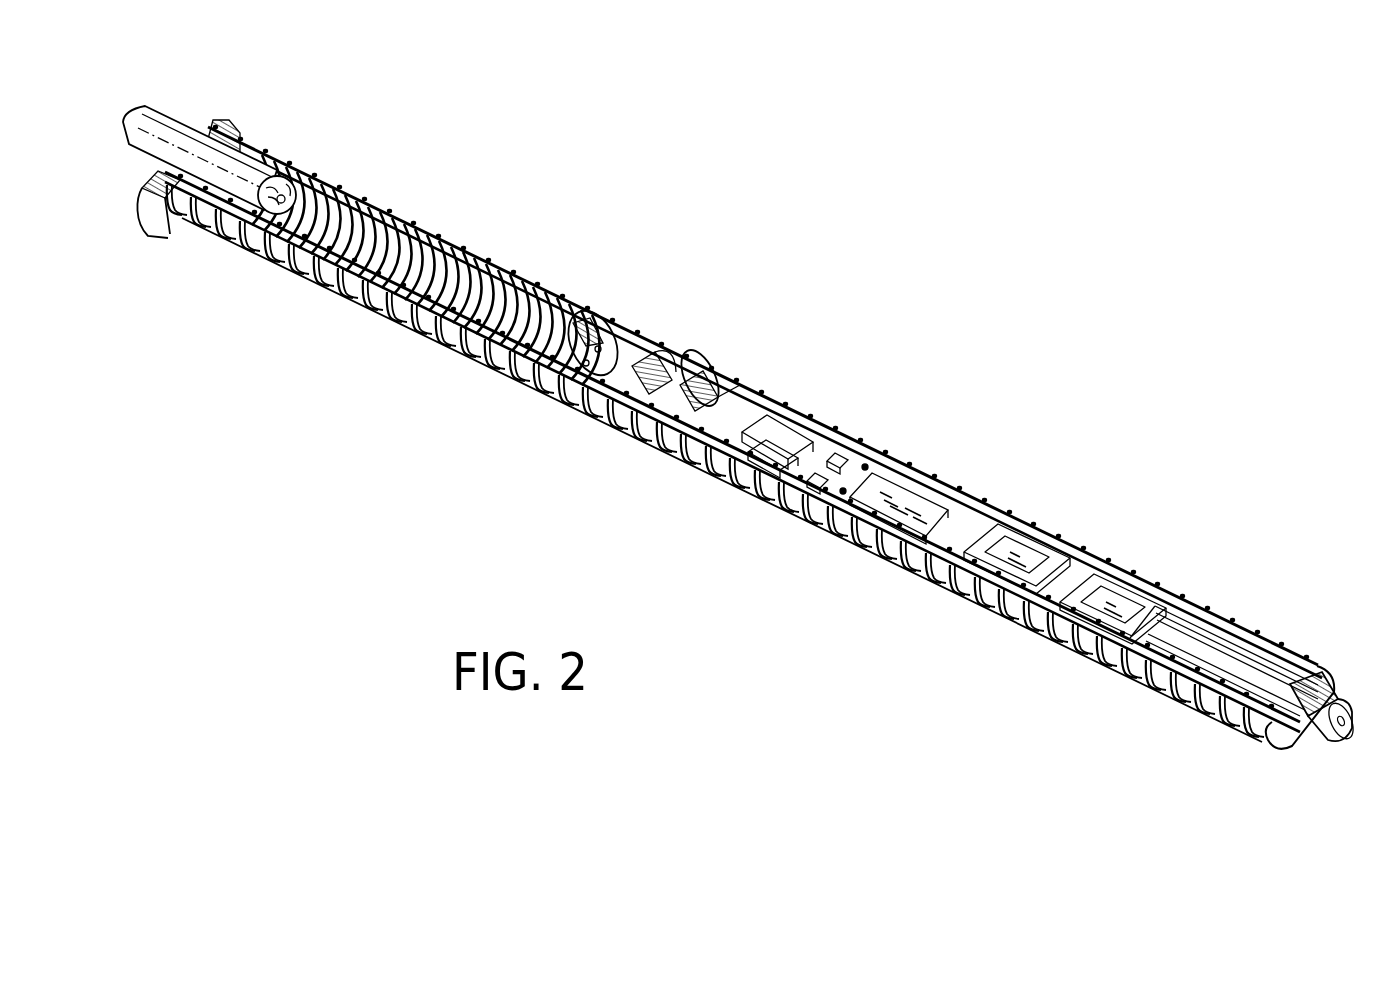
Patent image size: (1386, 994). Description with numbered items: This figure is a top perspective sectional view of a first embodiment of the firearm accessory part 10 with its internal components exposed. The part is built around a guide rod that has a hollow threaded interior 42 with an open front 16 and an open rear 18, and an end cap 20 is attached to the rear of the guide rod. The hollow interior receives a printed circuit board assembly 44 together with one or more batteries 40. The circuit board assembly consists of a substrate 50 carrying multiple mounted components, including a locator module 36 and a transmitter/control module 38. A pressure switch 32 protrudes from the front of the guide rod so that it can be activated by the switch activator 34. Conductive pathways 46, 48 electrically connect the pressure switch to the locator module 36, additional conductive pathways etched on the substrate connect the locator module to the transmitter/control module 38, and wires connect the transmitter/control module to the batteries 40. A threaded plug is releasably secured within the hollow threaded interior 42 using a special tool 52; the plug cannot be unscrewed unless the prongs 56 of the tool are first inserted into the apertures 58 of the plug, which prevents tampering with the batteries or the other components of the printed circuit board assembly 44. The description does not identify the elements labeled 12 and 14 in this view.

The firearm accessory part 10 is at (598, 497).
The corrugated outer sheath ribs 12 is at (415, 318).
The elongated tube body 14 is at (518, 382).
The open front 16 is at (1265, 744).
The open rear 18 is at (178, 122).
The end cap 20 is at (156, 220).
The pressure switch 32 is at (1312, 688).
The switch activator 34 is at (1340, 736).
The locator module 36 is at (1110, 590).
The transmitter/control module 38 is at (1022, 545).
The batteries 40 is at (666, 372).
The hollow threaded interior 42 is at (535, 307).
The printed circuit board assembly 44 is at (698, 362).
The conductive pathway 46 is at (1176, 650).
The conductive pathway 48 is at (1236, 655).
The substrate 50 is at (758, 418).
The special tool 52 is at (244, 167).
The prongs 56 is at (298, 186).
The apertures 58 is at (619, 338).